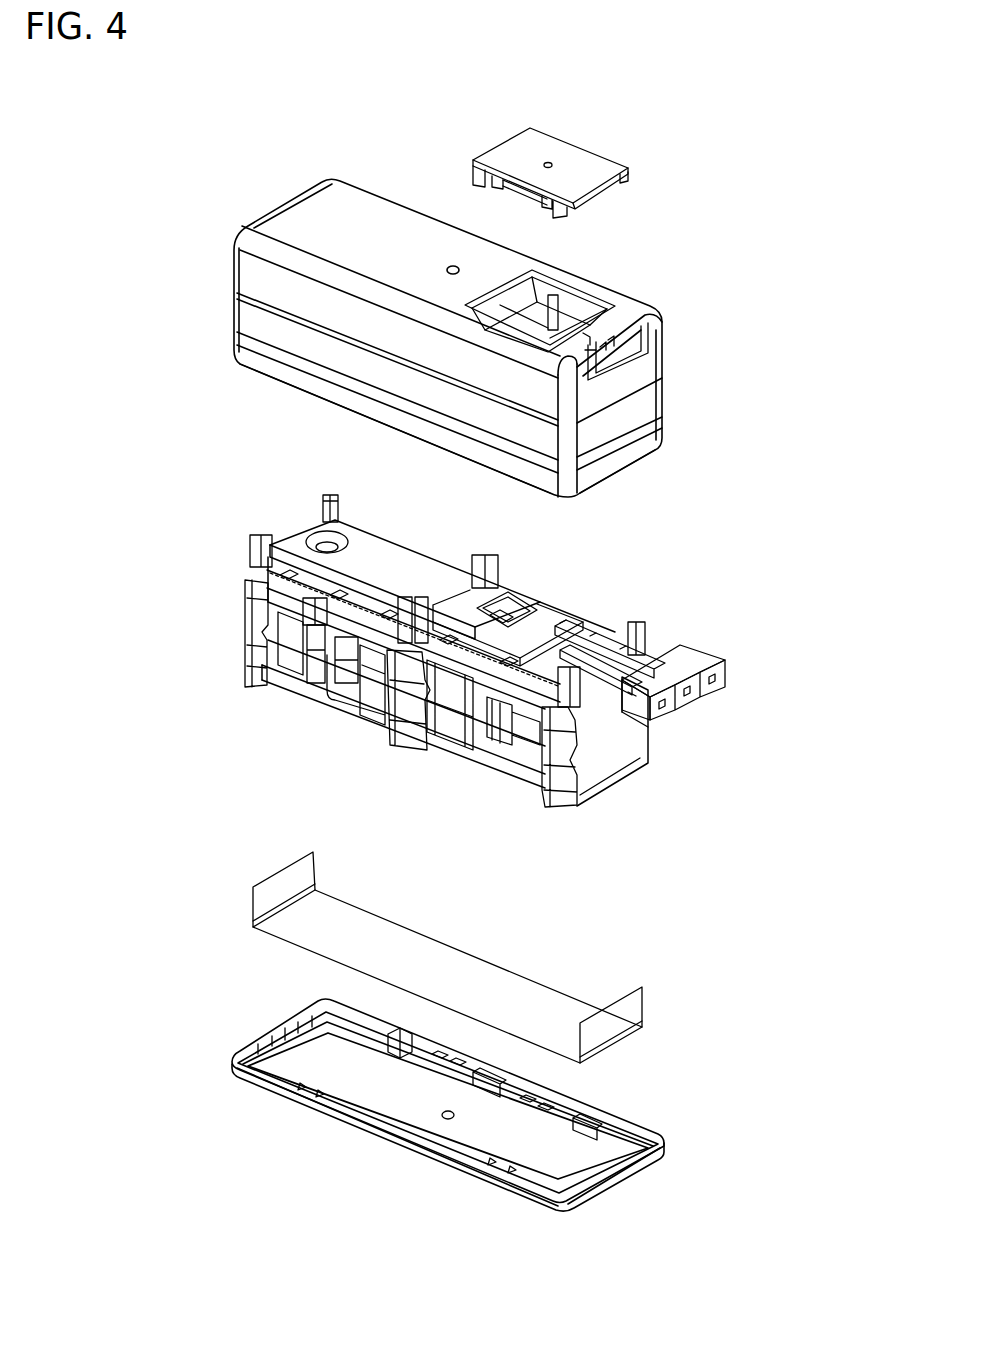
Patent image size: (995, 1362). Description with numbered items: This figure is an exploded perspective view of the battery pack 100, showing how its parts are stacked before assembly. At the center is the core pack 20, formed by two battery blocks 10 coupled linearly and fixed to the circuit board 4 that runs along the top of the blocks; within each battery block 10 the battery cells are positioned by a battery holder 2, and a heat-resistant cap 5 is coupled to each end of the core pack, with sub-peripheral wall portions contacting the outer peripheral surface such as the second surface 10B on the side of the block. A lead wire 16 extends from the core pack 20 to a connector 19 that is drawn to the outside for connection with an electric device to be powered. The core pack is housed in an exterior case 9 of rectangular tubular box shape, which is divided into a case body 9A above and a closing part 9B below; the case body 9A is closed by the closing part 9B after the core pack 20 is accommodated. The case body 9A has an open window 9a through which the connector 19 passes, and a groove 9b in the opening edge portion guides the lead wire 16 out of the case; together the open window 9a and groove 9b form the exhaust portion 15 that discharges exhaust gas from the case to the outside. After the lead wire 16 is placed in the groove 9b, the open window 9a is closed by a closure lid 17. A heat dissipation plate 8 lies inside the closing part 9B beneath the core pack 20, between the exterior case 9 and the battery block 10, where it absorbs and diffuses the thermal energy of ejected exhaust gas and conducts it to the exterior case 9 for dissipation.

The battery pack 100 is at (238, 165).
The exterior case 9 is at (132, 488).
The case body 9A is at (237, 412).
The closing part 9B is at (245, 1001).
The open window 9a is at (565, 297).
The groove 9b is at (681, 351).
The exhaust portion 15 is at (593, 358).
The closure lid 17 is at (583, 160).
The heat dissipation plate 8 is at (487, 973).
The battery block 10 is at (333, 728).
The second surface 10B is at (535, 740).
The battery holder 2 is at (293, 687).
The circuit board 4 is at (537, 667).
The heat-resistant cap 5 is at (245, 596).
The lead wire 16 is at (603, 643).
The connector 19 is at (708, 652).
The core pack 20 is at (673, 790).